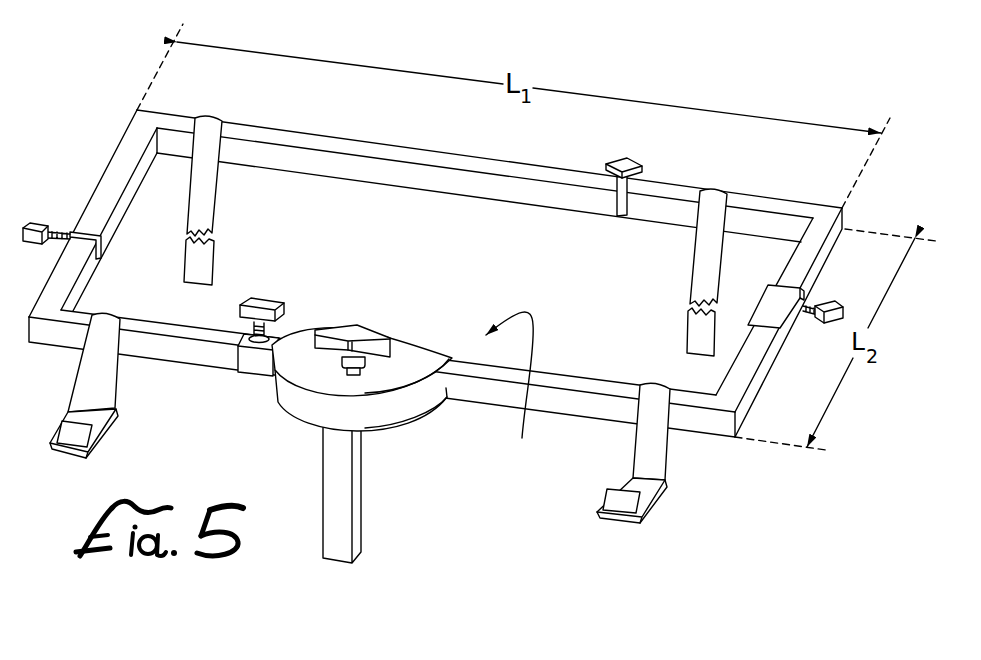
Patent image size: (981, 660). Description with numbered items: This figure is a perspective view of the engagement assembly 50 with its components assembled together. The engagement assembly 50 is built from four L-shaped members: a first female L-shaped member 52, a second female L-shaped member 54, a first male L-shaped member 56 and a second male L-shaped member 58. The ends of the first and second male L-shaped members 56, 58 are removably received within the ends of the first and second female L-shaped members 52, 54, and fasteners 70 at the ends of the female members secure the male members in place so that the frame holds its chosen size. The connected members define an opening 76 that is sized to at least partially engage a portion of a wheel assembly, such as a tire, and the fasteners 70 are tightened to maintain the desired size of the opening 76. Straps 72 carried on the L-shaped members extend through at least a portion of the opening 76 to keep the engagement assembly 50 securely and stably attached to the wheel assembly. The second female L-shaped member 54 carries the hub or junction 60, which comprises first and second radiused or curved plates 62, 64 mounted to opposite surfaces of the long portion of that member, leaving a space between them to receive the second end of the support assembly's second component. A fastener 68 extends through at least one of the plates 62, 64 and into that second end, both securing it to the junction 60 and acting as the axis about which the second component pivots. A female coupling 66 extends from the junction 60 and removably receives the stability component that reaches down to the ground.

The engagement assembly 50 is at (86, 105).
The first female L-shaped member 52 is at (330, 135).
The second female L-shaped member 54 is at (732, 385).
The first male L-shaped member 56 is at (53, 332).
The second male L-shaped member 58 is at (768, 205).
The junction 60 is at (266, 417).
The first curved plate 62 is at (409, 366).
The second curved plate 64 is at (400, 413).
The female coupling 66 is at (338, 477).
The fastener 68 is at (366, 326).
The fasteners 70 is at (43, 221).
The straps 72 is at (212, 124).
The opening 76 is at (509, 389).